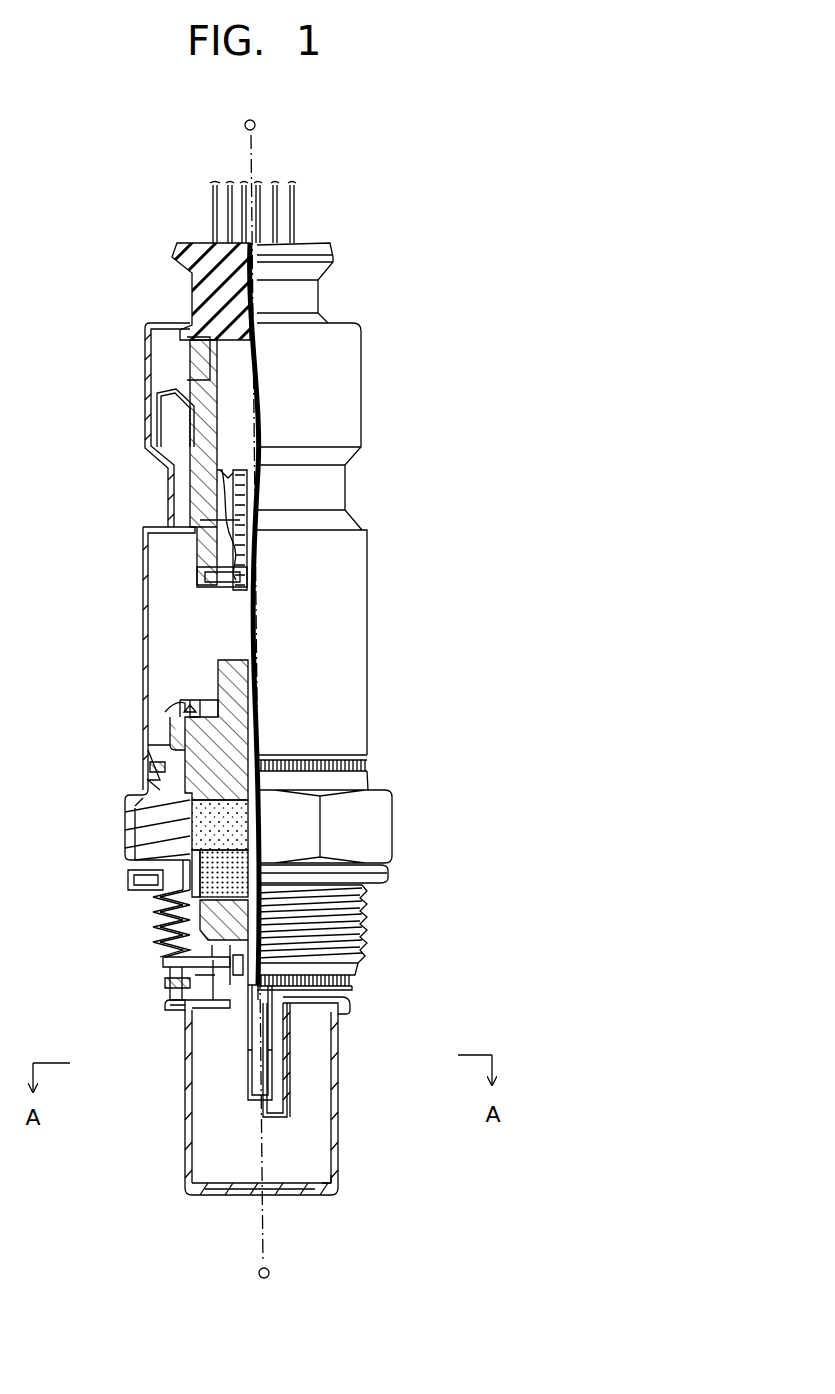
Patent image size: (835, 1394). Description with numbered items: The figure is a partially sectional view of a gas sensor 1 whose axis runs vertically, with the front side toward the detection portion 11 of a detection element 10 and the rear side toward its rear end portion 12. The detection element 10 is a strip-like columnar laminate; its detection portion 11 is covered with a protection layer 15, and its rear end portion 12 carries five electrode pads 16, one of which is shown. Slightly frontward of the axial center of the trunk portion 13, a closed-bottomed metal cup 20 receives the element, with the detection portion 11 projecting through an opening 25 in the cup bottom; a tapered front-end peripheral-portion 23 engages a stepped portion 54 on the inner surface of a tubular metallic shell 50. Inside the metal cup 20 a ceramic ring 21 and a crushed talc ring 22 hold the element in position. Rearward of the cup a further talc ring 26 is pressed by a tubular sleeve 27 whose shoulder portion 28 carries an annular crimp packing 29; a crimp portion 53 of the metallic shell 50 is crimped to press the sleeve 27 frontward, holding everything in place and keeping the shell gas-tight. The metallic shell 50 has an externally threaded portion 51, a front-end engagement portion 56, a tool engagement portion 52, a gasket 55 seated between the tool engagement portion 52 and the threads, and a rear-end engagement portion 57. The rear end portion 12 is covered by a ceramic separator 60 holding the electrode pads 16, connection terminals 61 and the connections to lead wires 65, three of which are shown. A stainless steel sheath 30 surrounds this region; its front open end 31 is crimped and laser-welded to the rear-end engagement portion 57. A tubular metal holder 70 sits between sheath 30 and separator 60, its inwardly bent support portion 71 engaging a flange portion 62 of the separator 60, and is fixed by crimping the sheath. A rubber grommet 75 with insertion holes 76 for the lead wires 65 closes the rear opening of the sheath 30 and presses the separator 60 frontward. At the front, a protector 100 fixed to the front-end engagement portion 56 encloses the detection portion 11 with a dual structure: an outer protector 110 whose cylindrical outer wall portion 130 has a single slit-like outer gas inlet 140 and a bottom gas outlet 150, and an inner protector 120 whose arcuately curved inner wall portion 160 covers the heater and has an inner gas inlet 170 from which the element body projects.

The gas sensor 1 is at (462, 305).
The detection element 10 is at (180, 1000).
The detection portion 11 is at (255, 1100).
The rear end portion 12 is at (235, 590).
The trunk portion 13 is at (225, 870).
The protection layer 15 is at (248, 1058).
The electrode pads 16 is at (240, 500).
The metal cup 20 is at (160, 905).
The ceramic ring 21 is at (165, 920).
The talc ring 22 is at (150, 883).
The front-end peripheral-portion 23 is at (180, 955).
The opening 25 is at (215, 985).
The talc ring 26 is at (220, 820).
The sleeve 27 is at (213, 658).
The shoulder portion 28 is at (175, 745).
The crimp packing 29 is at (200, 720).
The sheath 30 is at (388, 527).
The front open end 31 is at (145, 785).
The metallic shell 50 is at (405, 797).
The externally threaded portion 51 is at (215, 935).
The tool engagement portion 52 is at (160, 830).
The crimp portion 53 is at (195, 708).
The stepped portion 54 is at (180, 975).
The gasket 55 is at (402, 870).
The front-end engagement portion 56 is at (205, 1005).
The rear-end engagement portion 57 is at (155, 762).
The separator 60 is at (190, 467).
The connection terminals 61 is at (240, 553).
The flange portion 62 is at (190, 370).
The lead wires 65 is at (280, 228).
The metal holder 70 is at (165, 373).
The support portion 71 is at (190, 422).
The grommet 75 is at (230, 249).
The insertion holes 76 is at (225, 318).
The protector 100 is at (271, 1122).
The outer protector 110 is at (338, 1150).
The inner protector 120 is at (336, 1190).
The outer wall portion 130 is at (245, 1122).
The outer gas inlet 140 is at (330, 1062).
The gas outlet 150 is at (230, 1195).
The inner wall portion 160 is at (285, 1095).
The inner gas inlet 170 is at (250, 1145).